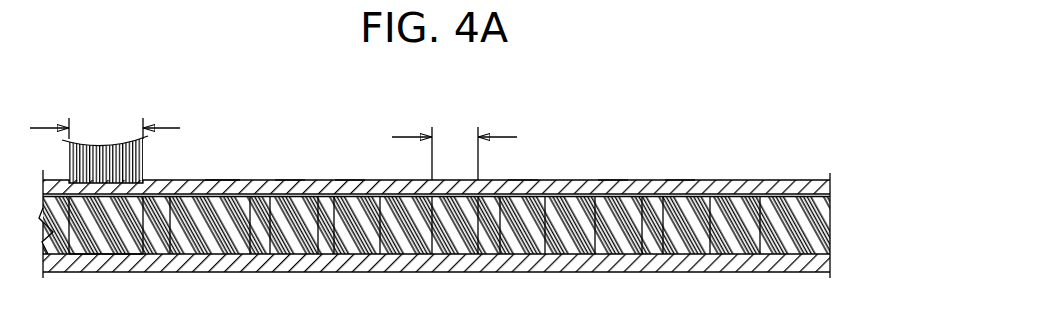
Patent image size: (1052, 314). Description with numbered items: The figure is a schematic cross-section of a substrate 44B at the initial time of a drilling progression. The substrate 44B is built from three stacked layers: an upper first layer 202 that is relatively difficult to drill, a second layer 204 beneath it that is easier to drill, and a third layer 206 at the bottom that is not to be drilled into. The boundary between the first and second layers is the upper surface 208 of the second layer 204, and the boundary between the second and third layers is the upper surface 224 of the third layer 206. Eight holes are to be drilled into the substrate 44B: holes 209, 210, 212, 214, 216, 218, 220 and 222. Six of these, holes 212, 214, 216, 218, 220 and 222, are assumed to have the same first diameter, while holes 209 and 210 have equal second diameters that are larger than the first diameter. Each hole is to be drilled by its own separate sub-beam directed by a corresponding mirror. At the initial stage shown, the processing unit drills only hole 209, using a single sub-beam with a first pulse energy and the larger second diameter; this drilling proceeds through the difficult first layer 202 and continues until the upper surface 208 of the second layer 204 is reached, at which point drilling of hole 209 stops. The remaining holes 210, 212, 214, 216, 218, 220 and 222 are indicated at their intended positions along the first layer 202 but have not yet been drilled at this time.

The substrate 44B is at (752, 147).
The upper first layer 202 is at (806, 180).
The second layer 204 is at (832, 224).
The third layer 206 is at (828, 263).
The upper surface of layer 204 208 is at (816, 205).
The hole 209 is at (98, 112).
The hole 210 is at (222, 170).
The hole 212 is at (290, 165).
The hole 214 is at (350, 165).
The hole 216 is at (430, 112).
The hole 218 is at (523, 168).
The hole 220 is at (613, 170).
The hole 222 is at (679, 170).
The upper surface of layer 206 224 is at (98, 246).